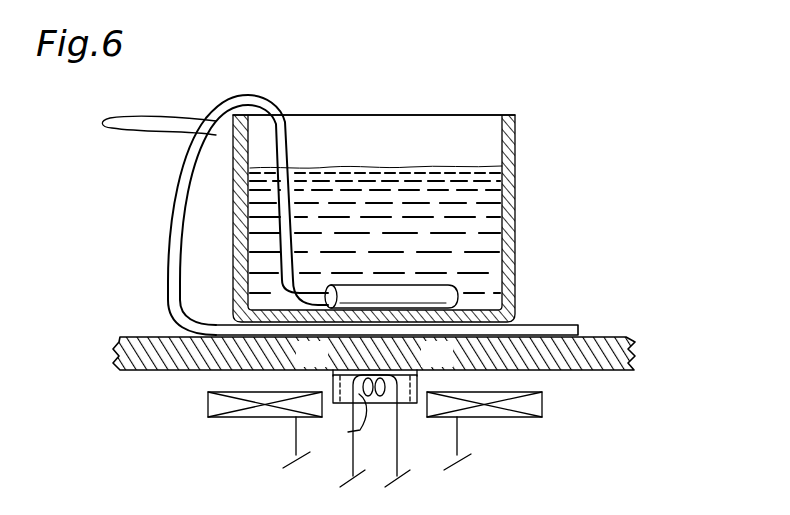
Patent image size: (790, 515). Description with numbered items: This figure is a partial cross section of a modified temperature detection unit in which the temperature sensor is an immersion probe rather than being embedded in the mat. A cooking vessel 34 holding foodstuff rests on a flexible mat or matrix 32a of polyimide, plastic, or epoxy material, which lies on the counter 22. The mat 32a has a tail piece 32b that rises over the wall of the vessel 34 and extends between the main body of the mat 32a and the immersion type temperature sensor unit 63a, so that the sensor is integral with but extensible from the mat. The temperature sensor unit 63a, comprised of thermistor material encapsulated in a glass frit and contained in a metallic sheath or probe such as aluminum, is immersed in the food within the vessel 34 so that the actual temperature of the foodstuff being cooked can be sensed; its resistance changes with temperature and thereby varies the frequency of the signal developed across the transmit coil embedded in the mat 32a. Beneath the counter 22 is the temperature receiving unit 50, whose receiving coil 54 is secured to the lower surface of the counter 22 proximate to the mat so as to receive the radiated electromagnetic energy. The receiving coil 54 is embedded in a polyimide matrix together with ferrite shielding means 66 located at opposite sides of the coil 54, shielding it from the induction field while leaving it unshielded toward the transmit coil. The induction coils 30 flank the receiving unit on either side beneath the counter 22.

The counter 22 is at (636, 360).
The electromagnet coils 30 is at (545, 405).
The mat or matrix 32a is at (529, 325).
The tail piece 32b is at (176, 240).
The cooking vessel 34 is at (515, 201).
The temperature receiving unit 50 is at (411, 413).
The receiving coil 54 is at (365, 431).
The temperature sensor unit 63a is at (384, 288).
The shielding means 66 is at (333, 382).